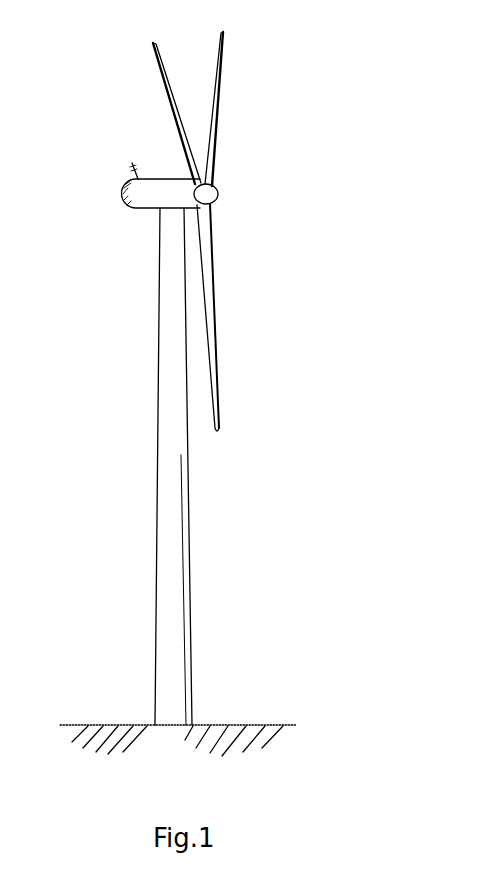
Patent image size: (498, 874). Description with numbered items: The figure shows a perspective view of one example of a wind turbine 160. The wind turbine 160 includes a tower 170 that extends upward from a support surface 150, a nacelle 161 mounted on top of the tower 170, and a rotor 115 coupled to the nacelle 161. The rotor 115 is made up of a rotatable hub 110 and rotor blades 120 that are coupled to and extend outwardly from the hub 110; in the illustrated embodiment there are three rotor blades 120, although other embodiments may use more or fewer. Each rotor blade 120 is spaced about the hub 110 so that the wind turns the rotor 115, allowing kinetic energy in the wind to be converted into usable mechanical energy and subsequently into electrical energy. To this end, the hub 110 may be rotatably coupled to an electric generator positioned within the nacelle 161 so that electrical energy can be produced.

The rotatable hub 110 is at (219, 203).
The rotor 115 is at (227, 177).
The rotor blade 120 is at (220, 52).
The support surface 150 is at (110, 724).
The wind turbine 160 is at (328, 60).
The nacelle 161 is at (147, 208).
The tower 170 is at (161, 540).